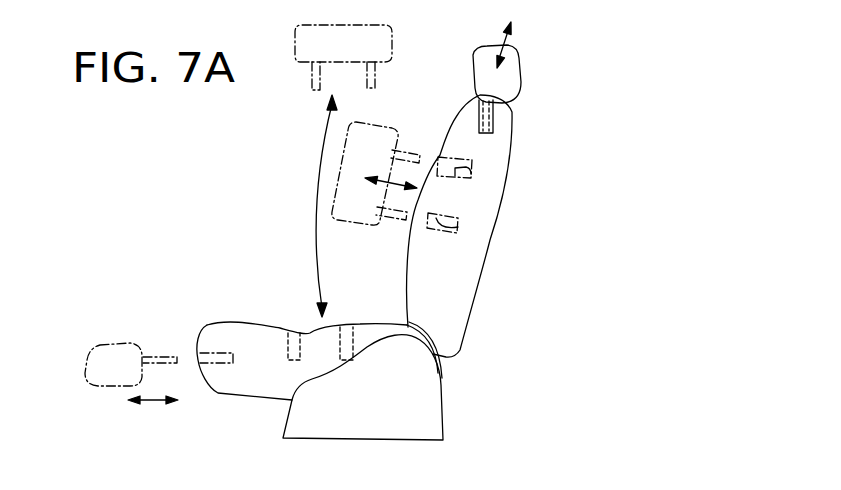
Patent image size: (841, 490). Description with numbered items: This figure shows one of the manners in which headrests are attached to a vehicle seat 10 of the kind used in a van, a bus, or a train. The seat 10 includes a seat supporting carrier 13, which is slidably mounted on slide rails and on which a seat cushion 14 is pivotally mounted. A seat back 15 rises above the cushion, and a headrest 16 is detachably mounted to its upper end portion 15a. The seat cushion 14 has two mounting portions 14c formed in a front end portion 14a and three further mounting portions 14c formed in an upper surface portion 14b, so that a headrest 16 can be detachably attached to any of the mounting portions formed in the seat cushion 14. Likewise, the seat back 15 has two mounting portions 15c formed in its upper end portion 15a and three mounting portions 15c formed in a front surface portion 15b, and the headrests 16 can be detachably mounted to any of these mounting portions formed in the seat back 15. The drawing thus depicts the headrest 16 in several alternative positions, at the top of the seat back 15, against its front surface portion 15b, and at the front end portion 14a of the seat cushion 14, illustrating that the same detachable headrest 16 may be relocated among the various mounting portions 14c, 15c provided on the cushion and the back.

The seat 10 is at (668, 75).
The seat supporting carrier 13 is at (433, 417).
The seat cushion 14 is at (250, 403).
The front end portion 14a is at (215, 372).
The upper surface portion 14b is at (248, 322).
The mounting portions 14c is at (210, 375).
The seat back 15 is at (480, 290).
The upper end portion 15a is at (507, 118).
The front surface portion 15b is at (408, 258).
The mounting portions 15c is at (497, 123).
The headrest 16 is at (388, 125).